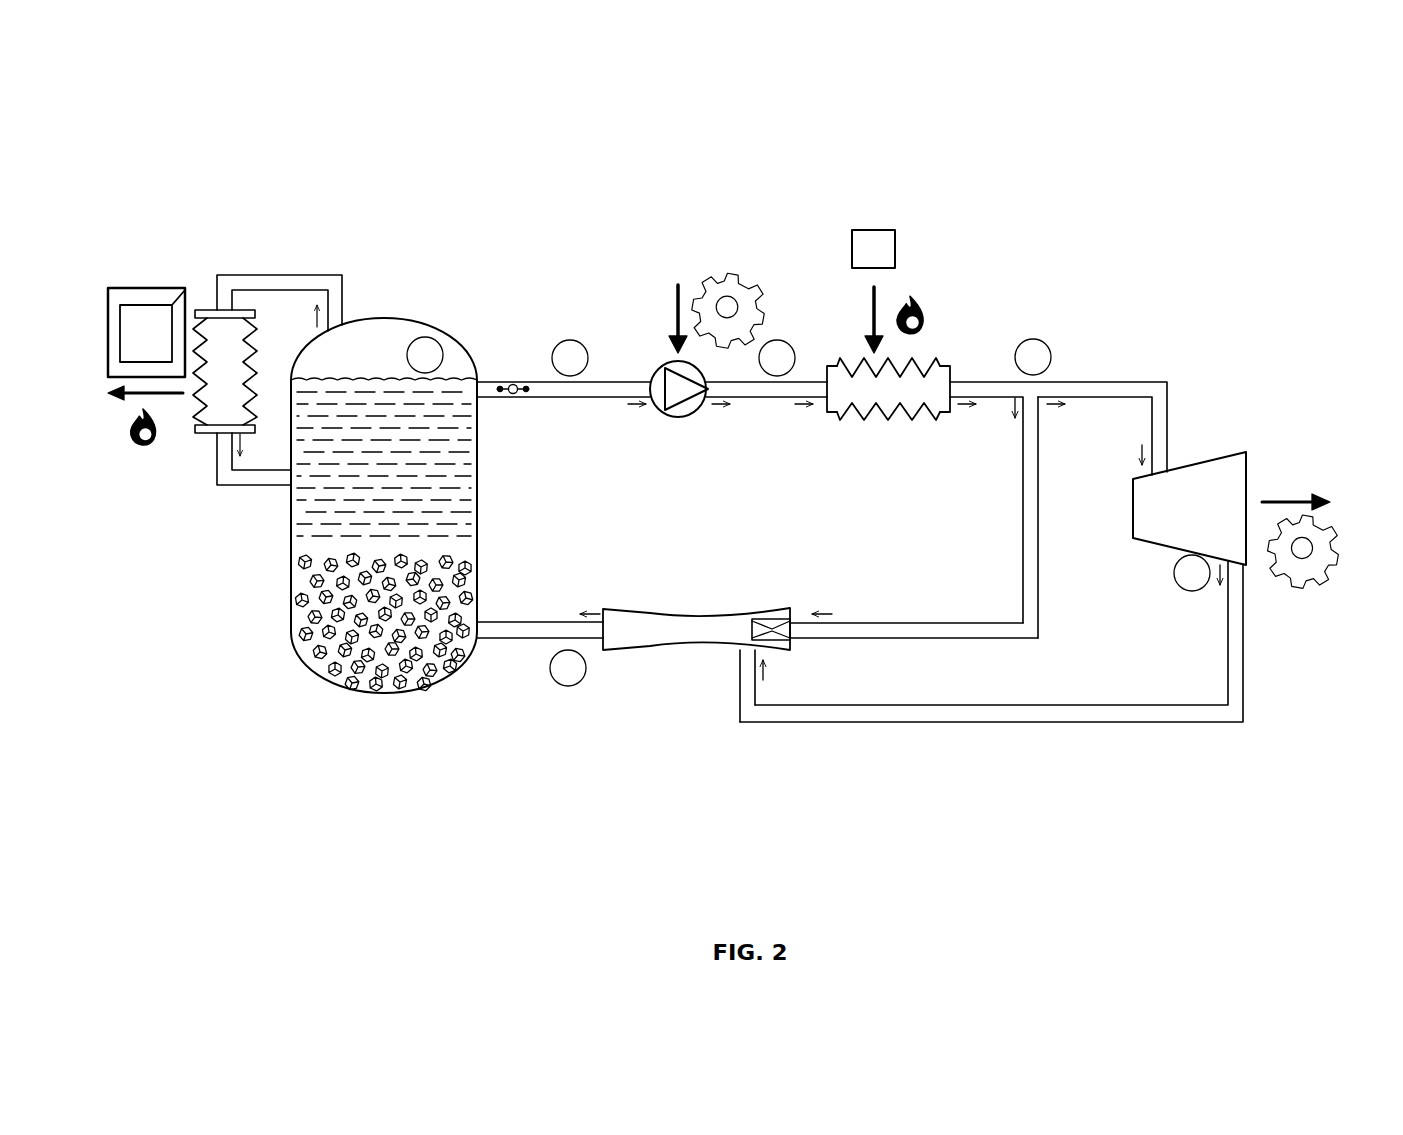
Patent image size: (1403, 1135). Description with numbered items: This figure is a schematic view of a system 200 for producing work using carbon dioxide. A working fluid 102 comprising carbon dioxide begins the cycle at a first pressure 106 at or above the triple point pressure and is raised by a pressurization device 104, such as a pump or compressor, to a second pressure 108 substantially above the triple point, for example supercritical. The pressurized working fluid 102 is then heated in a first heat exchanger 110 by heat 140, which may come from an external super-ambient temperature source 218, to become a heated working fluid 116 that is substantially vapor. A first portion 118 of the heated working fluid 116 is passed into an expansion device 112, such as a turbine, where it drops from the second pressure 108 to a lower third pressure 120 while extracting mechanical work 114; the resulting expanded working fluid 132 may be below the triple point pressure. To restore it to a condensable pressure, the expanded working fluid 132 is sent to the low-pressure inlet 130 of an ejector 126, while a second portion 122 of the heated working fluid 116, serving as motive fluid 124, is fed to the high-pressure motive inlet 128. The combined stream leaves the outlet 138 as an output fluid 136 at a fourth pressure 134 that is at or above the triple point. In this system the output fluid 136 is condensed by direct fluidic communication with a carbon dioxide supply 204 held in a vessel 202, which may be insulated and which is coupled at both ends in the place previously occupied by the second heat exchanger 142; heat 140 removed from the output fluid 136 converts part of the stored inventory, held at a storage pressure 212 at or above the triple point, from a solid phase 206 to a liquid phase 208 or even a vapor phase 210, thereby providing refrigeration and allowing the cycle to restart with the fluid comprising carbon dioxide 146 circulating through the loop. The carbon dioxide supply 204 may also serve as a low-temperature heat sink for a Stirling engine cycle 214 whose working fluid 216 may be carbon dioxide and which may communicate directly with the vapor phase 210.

The system for producing work 200 is at (1272, 150).
The working fluid 102 is at (603, 393).
The pressurization device 104 is at (665, 366).
The first pressure 106 is at (575, 342).
The second pressure 108 is at (791, 345).
The first heat exchanger 110 is at (920, 392).
The expansion device 112 is at (1212, 460).
The mechanical work 114 is at (1337, 557).
The heated working fluid 116 is at (982, 393).
The first portion of the heated working fluid 118 is at (1105, 390).
The third pressure 120 is at (1195, 593).
The second portion of the heated working fluid 122 is at (1030, 593).
The motive fluid 124 is at (882, 630).
The ejector 126 is at (681, 589).
The high-pressure motive inlet 128 is at (790, 645).
The low-pressure inlet 130 is at (735, 648).
The expanded working fluid 132 is at (1232, 678).
The fourth pressure 134 is at (550, 677).
The output fluid 136 is at (510, 630).
The outlet of the ejector 138 is at (600, 651).
The heat 140 is at (137, 447).
The second heat exchanger 142 is at (242, 330).
The fluid comprising carbon dioxide 146 is at (526, 387).
The vessel 202 is at (302, 662).
The carbon dioxide supply 204 is at (243, 632).
The solid phase 206 is at (362, 680).
The liquid phase 208 is at (313, 512).
The vapor phase 210 is at (390, 340).
The storage pressure 212 is at (430, 337).
The Stirling engine cycle 214 is at (125, 248).
The working fluid of the Stirling engine 216 is at (176, 303).
The external super-ambient temperature source 218 is at (877, 228).